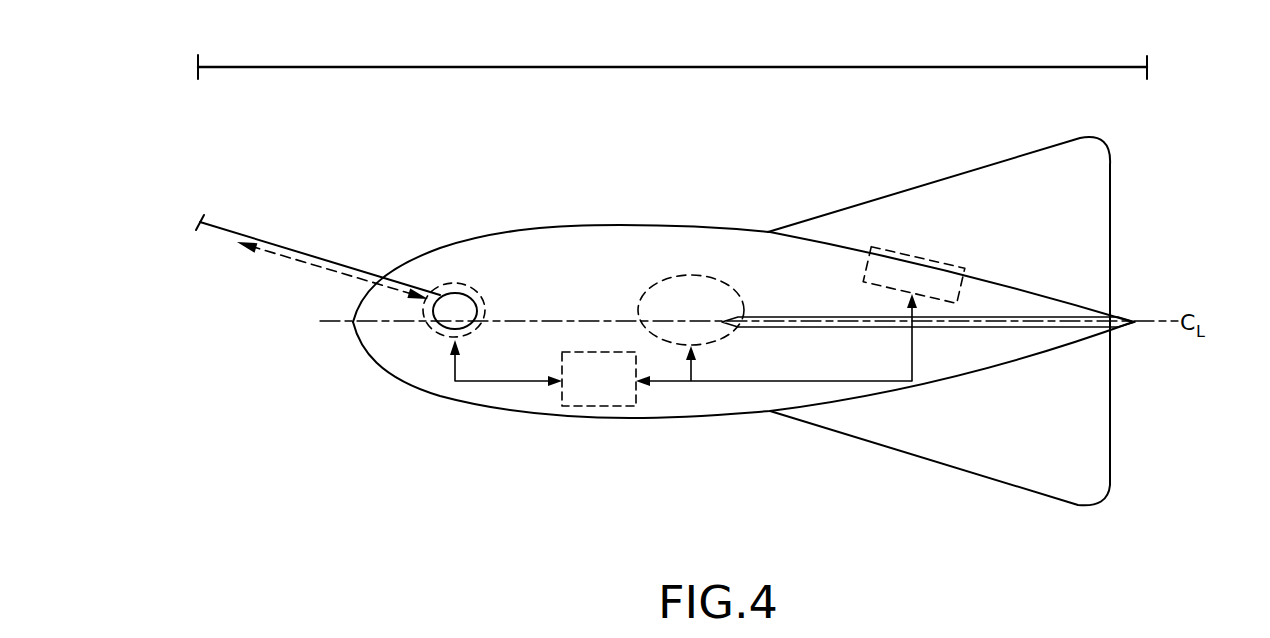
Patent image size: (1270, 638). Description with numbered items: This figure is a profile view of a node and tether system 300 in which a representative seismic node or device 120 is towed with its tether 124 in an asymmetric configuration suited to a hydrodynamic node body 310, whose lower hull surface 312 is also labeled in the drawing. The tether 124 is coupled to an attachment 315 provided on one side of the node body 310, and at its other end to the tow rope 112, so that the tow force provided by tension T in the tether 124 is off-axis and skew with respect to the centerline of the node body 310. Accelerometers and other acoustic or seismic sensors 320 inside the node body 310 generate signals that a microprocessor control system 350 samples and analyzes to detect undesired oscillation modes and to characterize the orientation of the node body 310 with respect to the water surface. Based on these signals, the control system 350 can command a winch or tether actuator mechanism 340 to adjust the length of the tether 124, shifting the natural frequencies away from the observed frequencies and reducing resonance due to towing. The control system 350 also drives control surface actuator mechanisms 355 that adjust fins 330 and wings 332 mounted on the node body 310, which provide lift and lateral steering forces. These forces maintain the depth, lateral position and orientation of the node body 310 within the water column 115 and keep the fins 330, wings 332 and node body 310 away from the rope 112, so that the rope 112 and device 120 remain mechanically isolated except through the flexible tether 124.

The rope 112 is at (1061, 66).
The water column 115 is at (310, 490).
The seismic node 120 is at (406, 183).
The tether 124 is at (306, 254).
The node and tether system 300 is at (252, 158).
The node body 310 is at (602, 242).
The body hull surface 312 is at (492, 426).
The attachment 315 is at (458, 296).
The sensors 320 is at (692, 275).
The fins 330 is at (1096, 160).
The wings 332 is at (772, 332).
The winch 340 is at (435, 350).
The microprocessor control system 350 is at (597, 407).
The control surface actuator mechanisms 355 is at (868, 270).